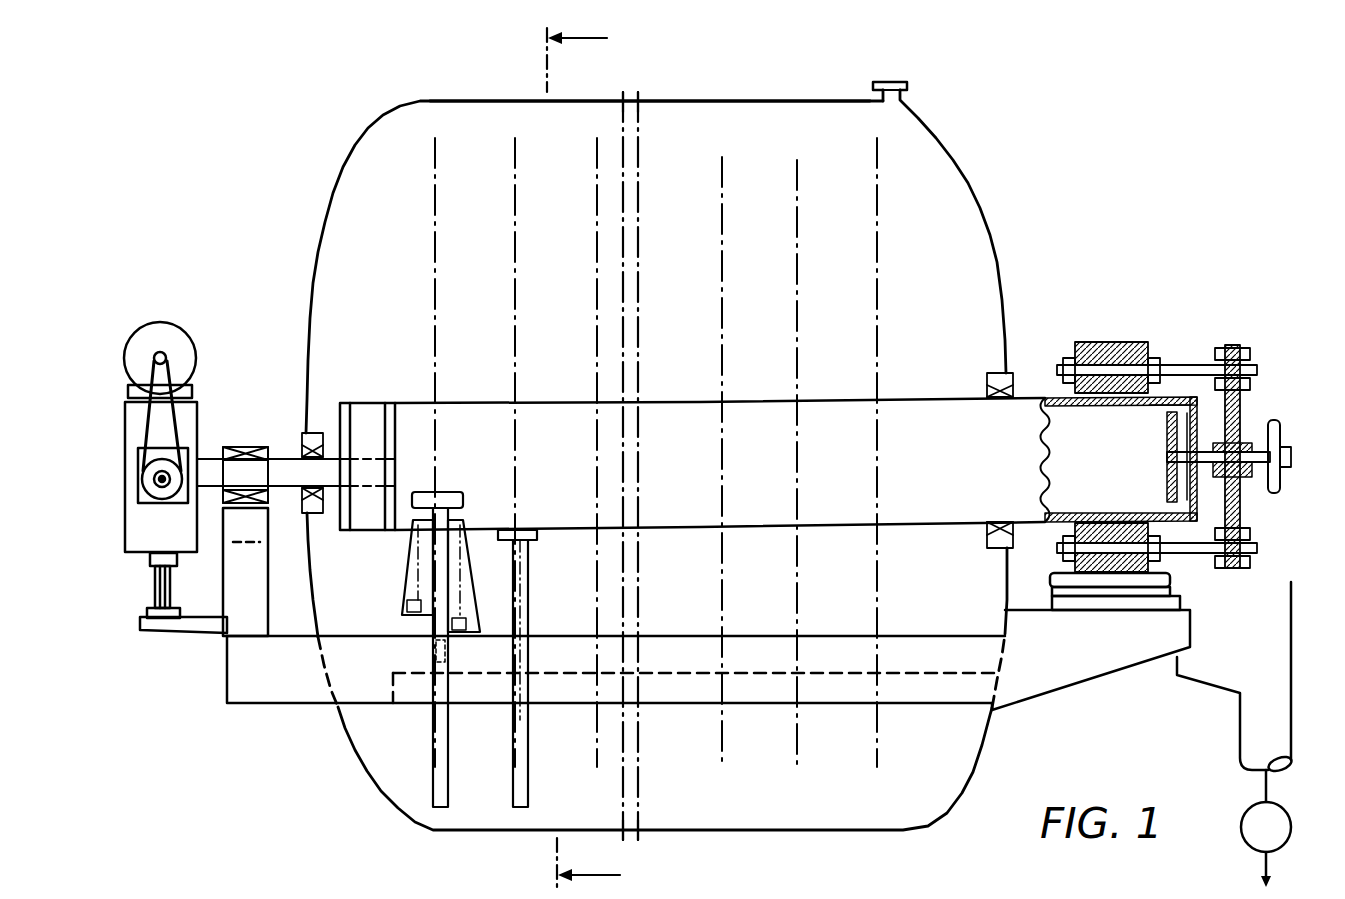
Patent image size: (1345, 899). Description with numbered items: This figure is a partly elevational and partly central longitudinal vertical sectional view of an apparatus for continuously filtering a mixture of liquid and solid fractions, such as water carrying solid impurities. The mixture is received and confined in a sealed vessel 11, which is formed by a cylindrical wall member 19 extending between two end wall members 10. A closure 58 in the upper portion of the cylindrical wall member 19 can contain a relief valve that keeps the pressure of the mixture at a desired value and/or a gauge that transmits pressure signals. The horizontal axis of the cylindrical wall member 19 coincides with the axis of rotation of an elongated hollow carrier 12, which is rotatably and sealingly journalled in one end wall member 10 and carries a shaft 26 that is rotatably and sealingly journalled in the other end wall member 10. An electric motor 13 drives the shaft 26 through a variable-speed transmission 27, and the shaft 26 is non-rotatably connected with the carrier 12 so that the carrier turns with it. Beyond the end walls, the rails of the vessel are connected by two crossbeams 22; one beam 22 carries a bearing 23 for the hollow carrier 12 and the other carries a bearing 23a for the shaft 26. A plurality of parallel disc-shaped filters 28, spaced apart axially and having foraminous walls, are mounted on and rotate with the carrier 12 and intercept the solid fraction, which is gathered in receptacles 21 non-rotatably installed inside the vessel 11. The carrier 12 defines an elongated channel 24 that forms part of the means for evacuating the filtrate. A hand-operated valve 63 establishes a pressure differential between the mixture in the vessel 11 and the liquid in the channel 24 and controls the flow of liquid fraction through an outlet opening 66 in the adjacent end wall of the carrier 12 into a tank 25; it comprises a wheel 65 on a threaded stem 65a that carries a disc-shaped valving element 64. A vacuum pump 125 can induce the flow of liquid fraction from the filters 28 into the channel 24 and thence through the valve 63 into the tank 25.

The end wall member 10 is at (304, 269).
The sealed vessel 11 is at (800, 86).
The elongated hollow carrier 12 is at (768, 430).
The electric motor 13 is at (148, 338).
The cylindrical wall member 19 is at (701, 99).
The receptacles 21 is at (404, 590).
The crossbeams 22 is at (248, 613).
The bearing 23 is at (1091, 341).
The bearing 23a is at (251, 448).
The elongated channel 24 is at (1157, 418).
The tank 25 is at (1260, 702).
The shaft 26 is at (209, 470).
The variable-speed transmission 27 is at (138, 428).
The disc-shaped filters 28 is at (800, 183).
The closure 58 is at (906, 88).
The valve 63 is at (1257, 391).
The disc-shaped valving element 64 is at (1166, 485).
The wheel 65 is at (1282, 482).
The threaded stem 65a is at (1213, 440).
The outlet opening 66 is at (1200, 482).
The vacuum pump 125 is at (1292, 827).